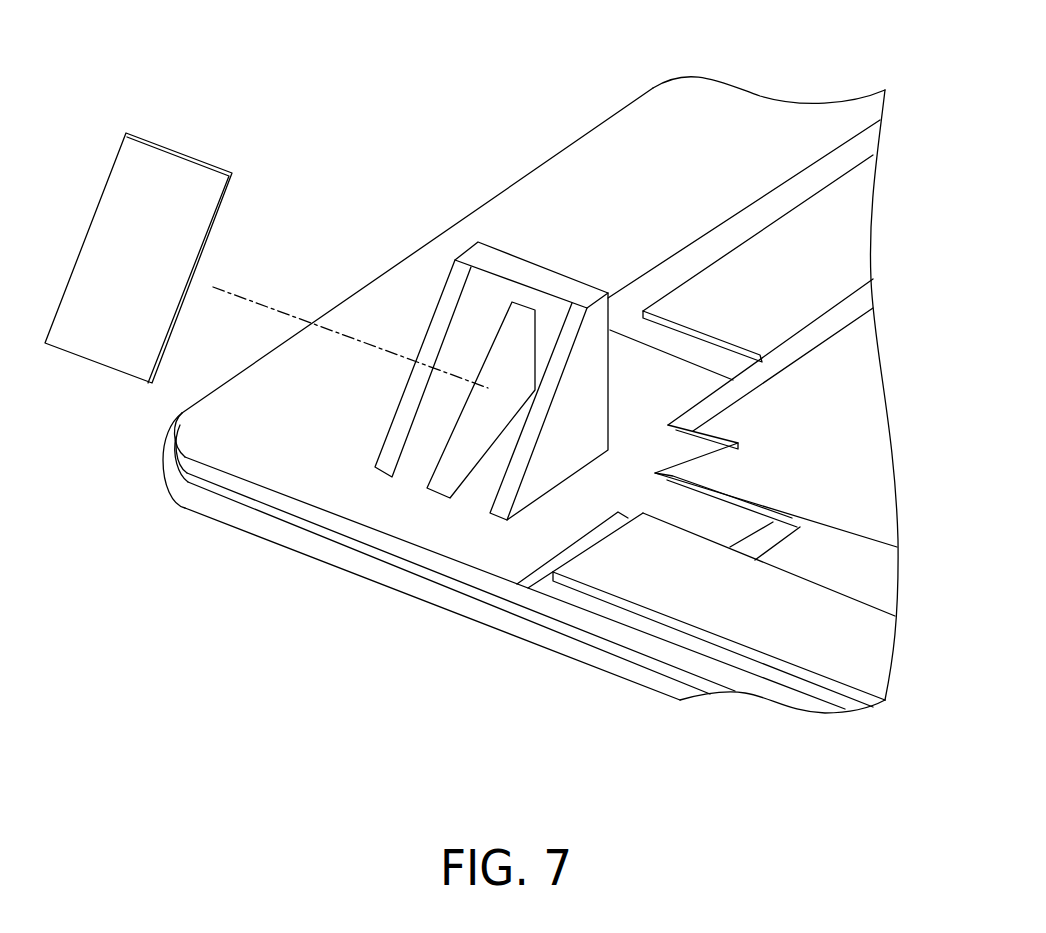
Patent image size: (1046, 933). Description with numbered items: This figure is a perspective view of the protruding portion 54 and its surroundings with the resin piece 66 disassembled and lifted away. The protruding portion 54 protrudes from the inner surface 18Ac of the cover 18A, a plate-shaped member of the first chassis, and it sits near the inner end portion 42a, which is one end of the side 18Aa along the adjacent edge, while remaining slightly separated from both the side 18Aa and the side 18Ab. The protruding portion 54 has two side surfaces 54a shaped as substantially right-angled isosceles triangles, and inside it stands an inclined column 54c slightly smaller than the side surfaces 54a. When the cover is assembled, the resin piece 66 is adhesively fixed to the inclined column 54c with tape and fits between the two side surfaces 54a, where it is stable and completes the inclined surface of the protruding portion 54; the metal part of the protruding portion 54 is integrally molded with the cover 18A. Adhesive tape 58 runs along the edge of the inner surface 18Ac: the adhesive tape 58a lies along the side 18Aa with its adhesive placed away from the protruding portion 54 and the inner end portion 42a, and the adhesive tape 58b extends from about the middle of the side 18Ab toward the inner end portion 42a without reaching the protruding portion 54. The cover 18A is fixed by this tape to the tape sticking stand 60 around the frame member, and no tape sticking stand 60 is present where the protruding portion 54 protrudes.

The cover 18A is at (607, 70).
The side 18Aa is at (565, 147).
The side 18Ab is at (550, 627).
The inner surface 18Ac is at (863, 378).
The inner end portion 42a is at (215, 427).
The protruding portion 54 is at (484, 353).
The side surfaces 54a is at (553, 457).
The inclined column 54c is at (505, 347).
The adhesive tape 58 is at (724, 386).
The adhesive tape 58a is at (845, 197).
The adhesive tape 58b is at (647, 593).
The tape sticking stand 60 is at (735, 115).
The resin piece 66 is at (172, 177).